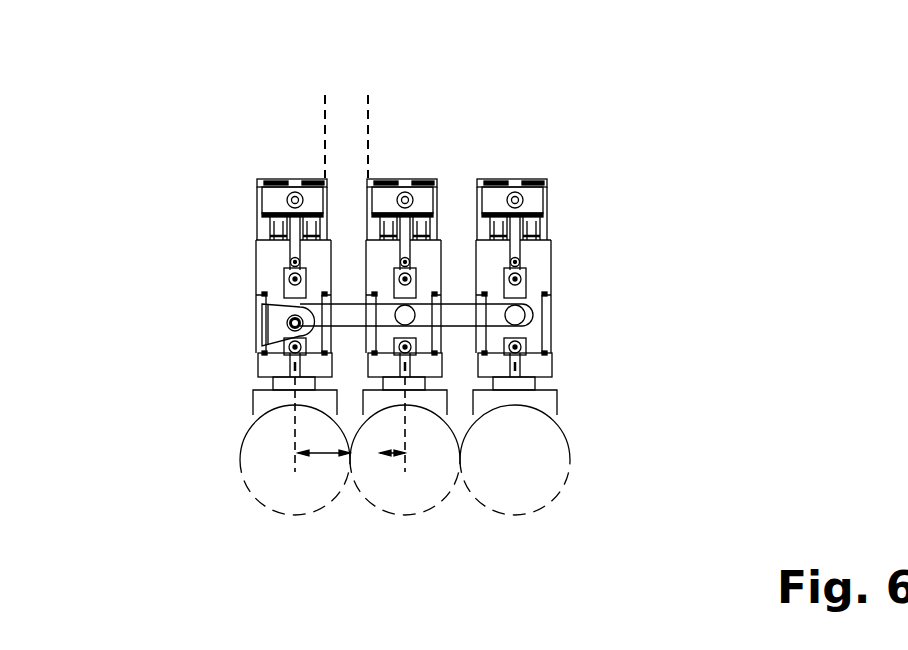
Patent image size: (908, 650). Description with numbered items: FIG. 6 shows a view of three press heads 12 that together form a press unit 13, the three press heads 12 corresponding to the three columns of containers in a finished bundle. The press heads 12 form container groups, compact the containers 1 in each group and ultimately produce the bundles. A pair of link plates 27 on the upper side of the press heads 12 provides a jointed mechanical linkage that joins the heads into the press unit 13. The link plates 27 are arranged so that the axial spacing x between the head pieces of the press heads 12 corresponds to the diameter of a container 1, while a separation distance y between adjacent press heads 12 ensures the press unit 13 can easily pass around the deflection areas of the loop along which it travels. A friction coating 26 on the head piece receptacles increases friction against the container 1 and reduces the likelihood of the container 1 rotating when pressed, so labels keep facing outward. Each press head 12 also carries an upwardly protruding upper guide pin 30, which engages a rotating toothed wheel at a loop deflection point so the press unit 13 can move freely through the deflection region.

The container 1 is at (263, 475).
The press head 12 is at (263, 273).
The press unit 13 is at (463, 131).
The friction coating 26 is at (275, 405).
The link plate 27 is at (345, 313).
The upper guide pin 30 is at (287, 324).